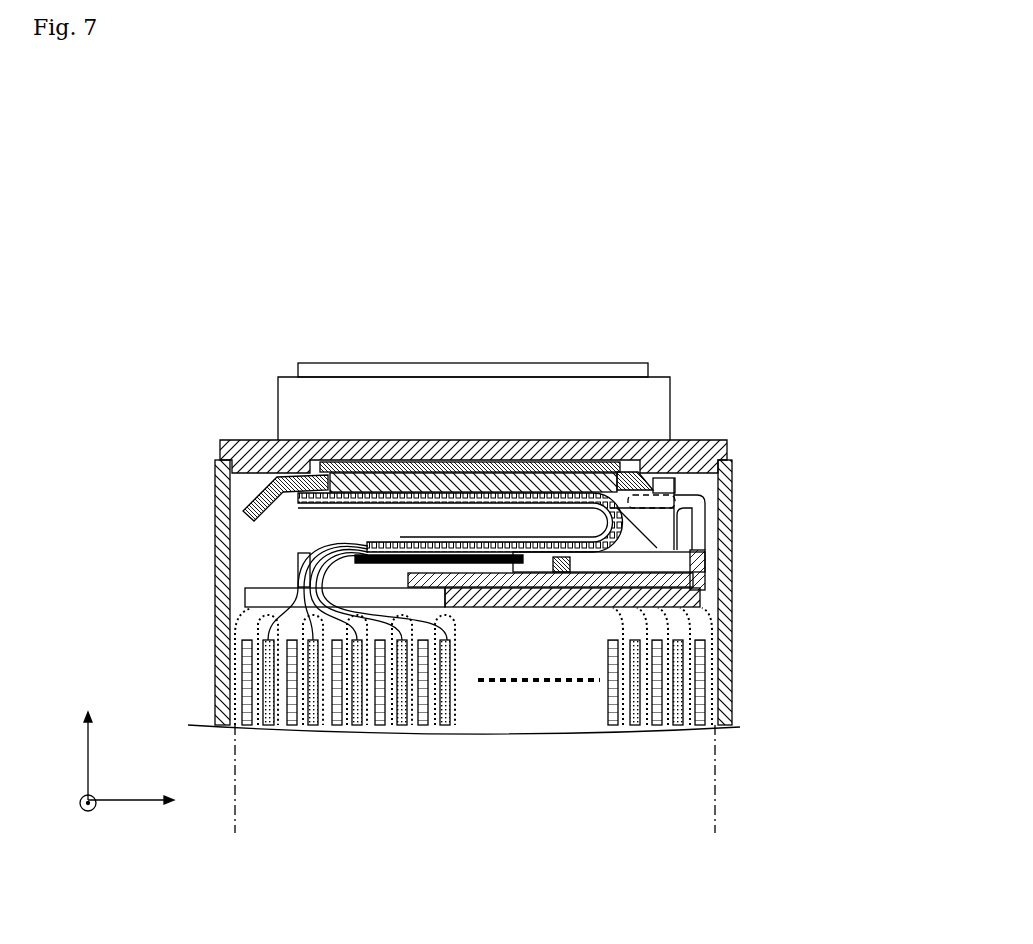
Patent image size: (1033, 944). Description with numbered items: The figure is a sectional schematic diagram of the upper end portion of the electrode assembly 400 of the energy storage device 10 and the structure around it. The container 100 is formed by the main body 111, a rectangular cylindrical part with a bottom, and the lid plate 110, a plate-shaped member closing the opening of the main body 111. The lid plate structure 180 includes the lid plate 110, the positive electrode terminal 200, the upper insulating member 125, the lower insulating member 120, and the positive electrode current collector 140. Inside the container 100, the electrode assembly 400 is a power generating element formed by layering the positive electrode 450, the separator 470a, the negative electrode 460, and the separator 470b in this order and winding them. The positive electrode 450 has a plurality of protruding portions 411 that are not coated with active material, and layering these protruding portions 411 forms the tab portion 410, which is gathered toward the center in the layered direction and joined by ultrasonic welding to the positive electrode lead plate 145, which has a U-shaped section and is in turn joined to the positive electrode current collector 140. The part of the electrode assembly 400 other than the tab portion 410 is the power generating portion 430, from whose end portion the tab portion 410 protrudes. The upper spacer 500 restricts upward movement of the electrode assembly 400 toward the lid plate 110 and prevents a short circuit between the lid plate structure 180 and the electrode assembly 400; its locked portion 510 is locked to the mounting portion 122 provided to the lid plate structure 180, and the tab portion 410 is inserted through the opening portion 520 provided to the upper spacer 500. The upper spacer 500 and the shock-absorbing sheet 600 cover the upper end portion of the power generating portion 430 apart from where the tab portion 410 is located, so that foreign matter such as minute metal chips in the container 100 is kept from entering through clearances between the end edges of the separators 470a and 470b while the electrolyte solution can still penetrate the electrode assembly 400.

The energy storage device 10 is at (760, 288).
The container 100 is at (115, 382).
The lid plate 110 is at (233, 440).
The main body 111 is at (216, 478).
The lower insulating member 120 is at (268, 483).
The mounting portion 122 is at (662, 490).
The upper insulating member 125 is at (660, 377).
The positive electrode current collector 140 is at (348, 487).
The positive electrode lead plate 145 is at (437, 472).
The lid plate structure 180 is at (766, 425).
The positive electrode terminal 200 is at (527, 363).
The electrode assembly 400 is at (715, 833).
The tab portion 410 is at (270, 553).
The protruding portion 411 is at (243, 568).
The power generating portion 430 is at (558, 661).
The positive electrode 450 is at (270, 727).
The negative electrode 460 is at (249, 727).
The separator 470a is at (240, 617).
The separator 470b is at (245, 600).
The upper spacer 500 is at (662, 575).
The locked portion 510 is at (676, 505).
The opening portion 520 is at (355, 580).
The shock-absorbing sheet 600 is at (700, 600).